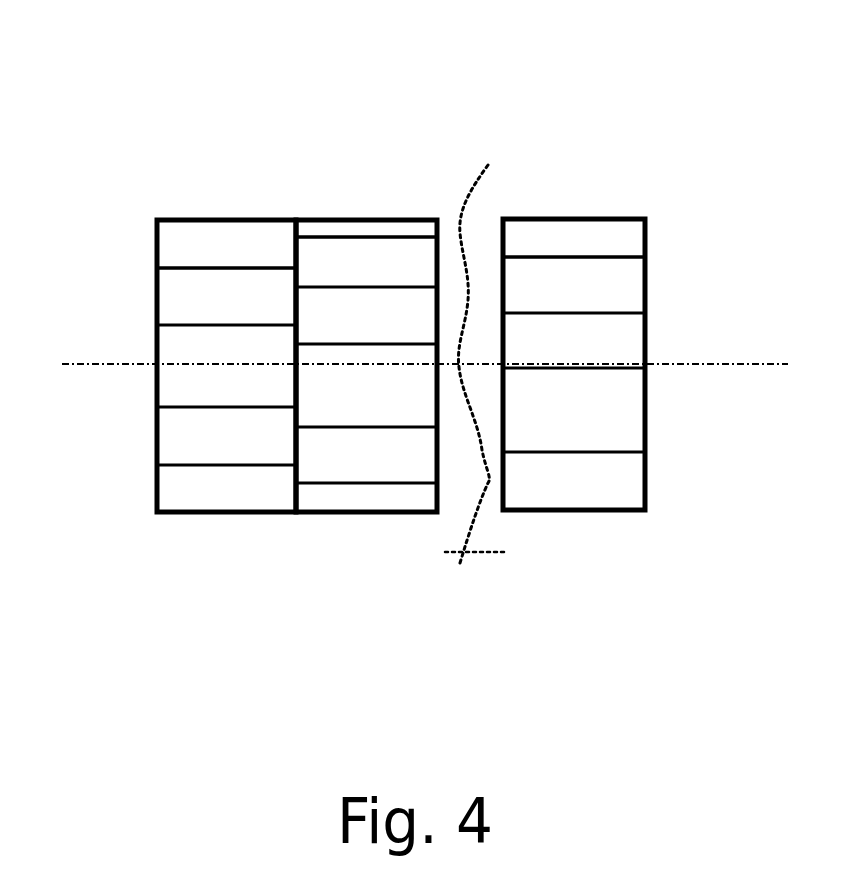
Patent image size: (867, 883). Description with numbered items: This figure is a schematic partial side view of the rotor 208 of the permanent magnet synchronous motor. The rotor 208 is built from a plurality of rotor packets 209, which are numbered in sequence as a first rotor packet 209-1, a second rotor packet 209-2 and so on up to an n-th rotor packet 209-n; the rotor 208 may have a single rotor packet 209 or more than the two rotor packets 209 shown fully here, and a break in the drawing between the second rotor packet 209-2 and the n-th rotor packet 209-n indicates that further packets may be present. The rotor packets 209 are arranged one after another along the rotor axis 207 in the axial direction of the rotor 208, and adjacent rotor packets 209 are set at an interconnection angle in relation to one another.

The rotor axis 207 is at (98, 363).
The rotor 208 is at (364, 170).
The rotor packet 209 is at (313, 222).
The first rotor packet 209-1 is at (212, 540).
The second rotor packet 209-2 is at (359, 540).
The n-th rotor packet 209-n is at (580, 540).